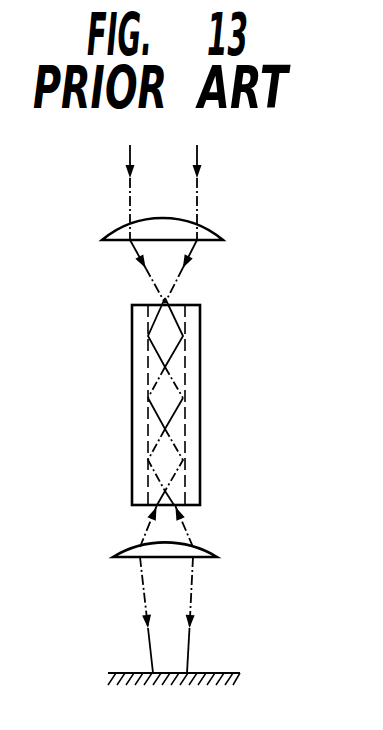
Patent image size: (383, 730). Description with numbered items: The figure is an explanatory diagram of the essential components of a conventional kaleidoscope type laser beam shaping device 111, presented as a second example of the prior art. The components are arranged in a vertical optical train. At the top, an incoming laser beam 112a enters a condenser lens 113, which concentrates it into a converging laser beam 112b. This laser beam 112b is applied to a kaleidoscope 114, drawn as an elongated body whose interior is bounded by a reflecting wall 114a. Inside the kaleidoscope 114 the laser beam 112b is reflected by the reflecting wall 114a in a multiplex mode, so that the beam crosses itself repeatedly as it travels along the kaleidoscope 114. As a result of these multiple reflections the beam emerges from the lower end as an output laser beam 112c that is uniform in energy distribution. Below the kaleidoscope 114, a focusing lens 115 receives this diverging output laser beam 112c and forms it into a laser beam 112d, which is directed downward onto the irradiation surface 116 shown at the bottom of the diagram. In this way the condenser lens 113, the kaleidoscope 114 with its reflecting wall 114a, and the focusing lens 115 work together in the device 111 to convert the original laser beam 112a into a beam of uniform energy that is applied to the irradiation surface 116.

The beam shaping device 111 is at (246, 170).
The laser beam 112a is at (128, 162).
The laser beam 112b is at (192, 256).
The output laser beam 112c is at (194, 540).
The laser beam 112d is at (192, 600).
The condenser lens 113 is at (220, 233).
The kaleidoscope 114 is at (200, 384).
The reflecting wall 114a is at (148, 437).
The focusing lens 115 is at (217, 552).
The irradiation surface 116 is at (232, 673).